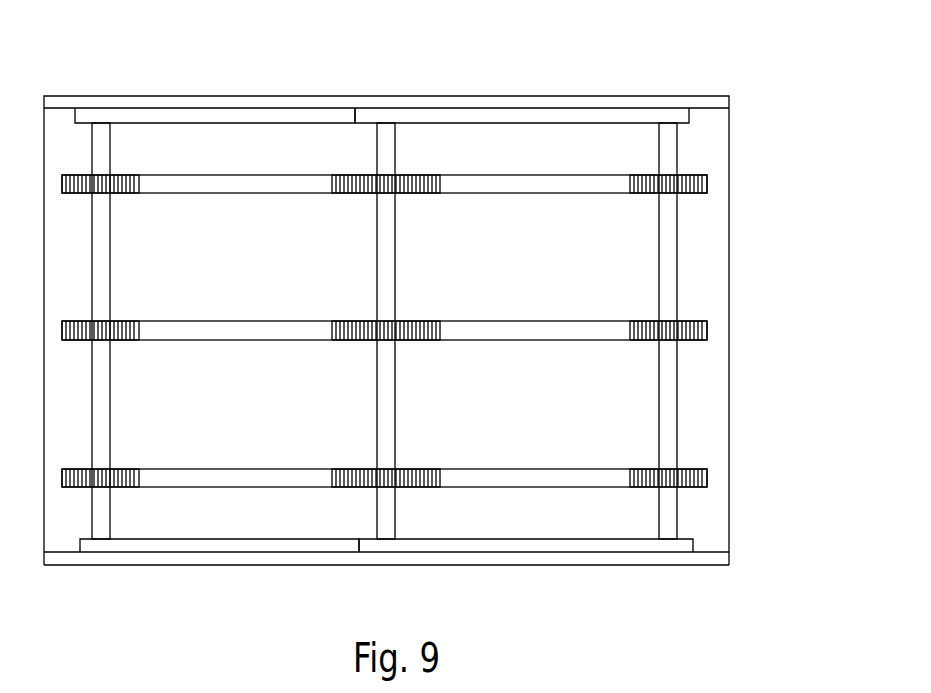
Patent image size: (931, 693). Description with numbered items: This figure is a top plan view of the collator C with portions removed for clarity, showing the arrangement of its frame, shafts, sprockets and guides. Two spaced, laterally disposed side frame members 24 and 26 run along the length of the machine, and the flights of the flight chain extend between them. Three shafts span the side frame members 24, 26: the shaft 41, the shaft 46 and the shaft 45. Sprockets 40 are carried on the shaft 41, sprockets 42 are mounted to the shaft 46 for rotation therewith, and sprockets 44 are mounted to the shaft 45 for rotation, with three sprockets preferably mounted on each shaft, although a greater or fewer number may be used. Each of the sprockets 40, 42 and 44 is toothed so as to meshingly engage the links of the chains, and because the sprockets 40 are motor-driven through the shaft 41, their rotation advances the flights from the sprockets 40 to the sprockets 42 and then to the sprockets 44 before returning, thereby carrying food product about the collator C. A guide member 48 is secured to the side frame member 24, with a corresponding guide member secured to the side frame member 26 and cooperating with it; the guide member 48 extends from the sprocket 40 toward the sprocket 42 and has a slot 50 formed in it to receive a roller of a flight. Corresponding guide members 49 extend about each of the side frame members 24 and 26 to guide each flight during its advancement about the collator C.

The side frame member 24 is at (222, 97).
The side frame member 26 is at (257, 561).
The sprocket 40 is at (120, 176).
The shaft 41 is at (103, 390).
The sprocket 42 is at (422, 176).
The sprocket 44 is at (697, 175).
The shaft 45 is at (667, 392).
The shaft 46 is at (379, 414).
The guide member 48 is at (283, 124).
The guide member 49 is at (536, 116).
The slot 50 is at (495, 188).
The collator C is at (755, 232).